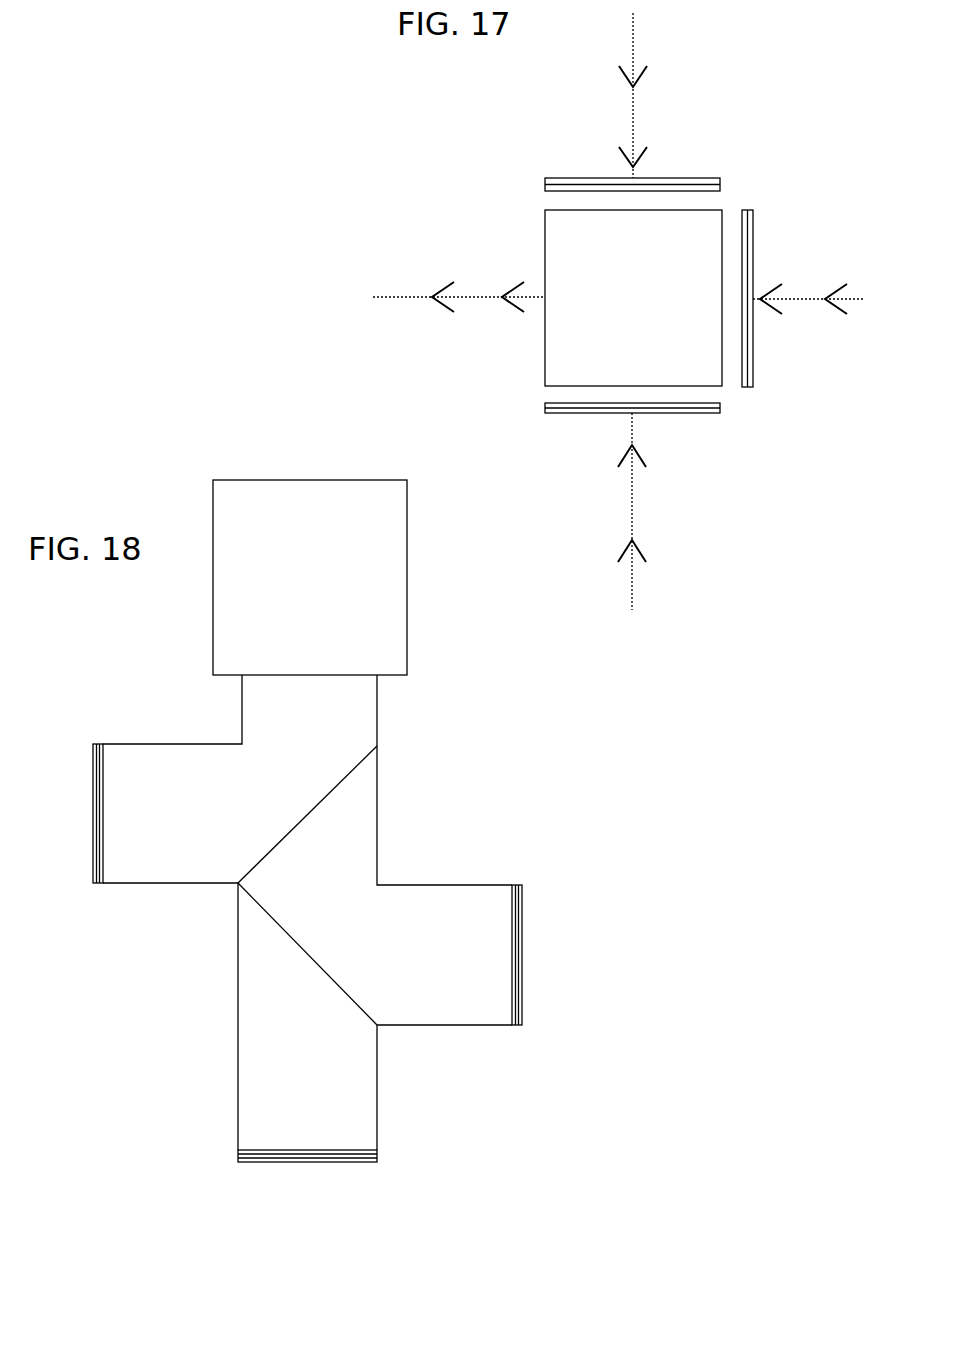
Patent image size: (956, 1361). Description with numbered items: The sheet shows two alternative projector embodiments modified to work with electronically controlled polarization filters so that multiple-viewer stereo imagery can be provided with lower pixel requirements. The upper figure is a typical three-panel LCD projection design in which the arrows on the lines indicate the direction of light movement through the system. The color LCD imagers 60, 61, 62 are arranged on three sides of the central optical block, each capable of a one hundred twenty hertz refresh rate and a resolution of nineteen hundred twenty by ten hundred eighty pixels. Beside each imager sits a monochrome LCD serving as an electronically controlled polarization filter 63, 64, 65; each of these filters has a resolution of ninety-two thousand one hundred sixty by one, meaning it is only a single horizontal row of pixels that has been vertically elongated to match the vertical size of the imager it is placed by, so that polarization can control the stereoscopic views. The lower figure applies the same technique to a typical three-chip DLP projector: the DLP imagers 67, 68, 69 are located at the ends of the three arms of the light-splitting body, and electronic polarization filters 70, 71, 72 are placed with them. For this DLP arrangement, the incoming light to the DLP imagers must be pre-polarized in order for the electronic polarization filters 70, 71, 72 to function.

In FIG. 17, the color LCD imager 60 is at (713, 176).
In FIG. 17, the color LCD imager 61 is at (753, 253).
In FIG. 17, the color LCD imager 62 is at (705, 415).
In FIG. 17, the electronically controlled polarization filter 63 is at (545, 187).
In FIG. 17, the electronically controlled polarization filter 64 is at (742, 393).
In FIG. 17, the electronically controlled polarization filter 65 is at (542, 404).
In FIG. 18, the DLP imager 67 is at (522, 1027).
In FIG. 18, the DLP imager 68 is at (95, 742).
In FIG. 18, the DLP imager 69 is at (375, 1163).
In FIG. 18, the electronic polarization filter 70 is at (512, 884).
In FIG. 18, the electronic polarization filter 71 is at (100, 886).
In FIG. 18, the electronic polarization filter 72 is at (237, 1152).